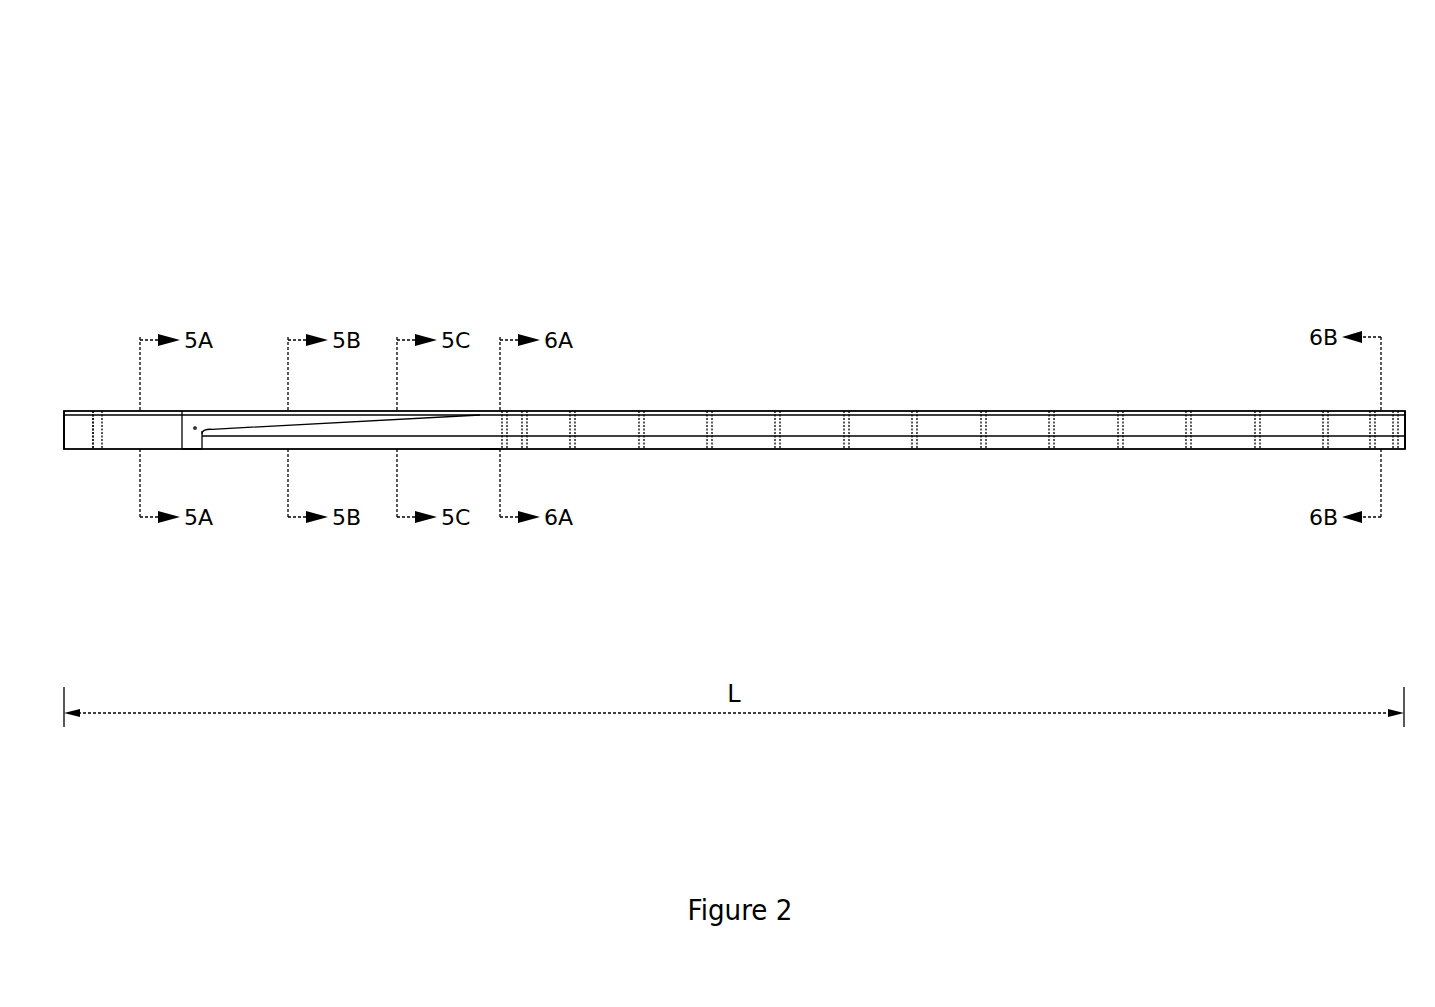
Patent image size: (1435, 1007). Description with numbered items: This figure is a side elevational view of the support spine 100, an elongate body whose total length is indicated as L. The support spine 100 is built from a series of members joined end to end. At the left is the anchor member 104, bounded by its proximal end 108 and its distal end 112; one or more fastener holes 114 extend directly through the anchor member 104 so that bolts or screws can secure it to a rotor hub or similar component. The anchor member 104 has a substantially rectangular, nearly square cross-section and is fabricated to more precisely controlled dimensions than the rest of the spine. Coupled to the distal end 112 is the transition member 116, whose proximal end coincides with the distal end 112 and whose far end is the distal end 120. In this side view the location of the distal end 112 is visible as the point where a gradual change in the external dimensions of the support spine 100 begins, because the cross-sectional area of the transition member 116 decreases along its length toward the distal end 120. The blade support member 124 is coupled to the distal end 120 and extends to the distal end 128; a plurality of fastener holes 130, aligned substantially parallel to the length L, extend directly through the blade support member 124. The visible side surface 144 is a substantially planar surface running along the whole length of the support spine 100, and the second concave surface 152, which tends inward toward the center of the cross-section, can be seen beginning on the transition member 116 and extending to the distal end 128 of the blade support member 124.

The support spine 100 is at (1108, 118).
The anchor member 104 is at (122, 386).
The proximal end 108 is at (66, 450).
The distal end 112 is at (203, 450).
The fastener holes 114 is at (97, 450).
The transition member 116 is at (259, 386).
The distal end 120 is at (485, 450).
The blade support member 124 is at (1000, 385).
The distal end 128 is at (1402, 450).
The fastener holes 130 is at (980, 450).
The side surface 144 is at (347, 413).
The second concave surface 152 is at (742, 425).